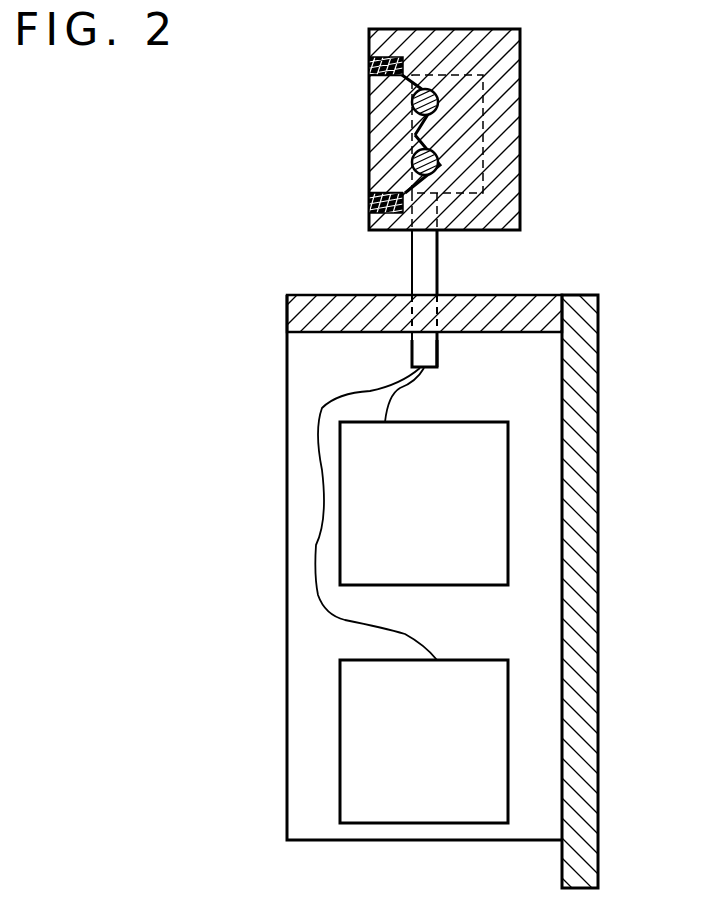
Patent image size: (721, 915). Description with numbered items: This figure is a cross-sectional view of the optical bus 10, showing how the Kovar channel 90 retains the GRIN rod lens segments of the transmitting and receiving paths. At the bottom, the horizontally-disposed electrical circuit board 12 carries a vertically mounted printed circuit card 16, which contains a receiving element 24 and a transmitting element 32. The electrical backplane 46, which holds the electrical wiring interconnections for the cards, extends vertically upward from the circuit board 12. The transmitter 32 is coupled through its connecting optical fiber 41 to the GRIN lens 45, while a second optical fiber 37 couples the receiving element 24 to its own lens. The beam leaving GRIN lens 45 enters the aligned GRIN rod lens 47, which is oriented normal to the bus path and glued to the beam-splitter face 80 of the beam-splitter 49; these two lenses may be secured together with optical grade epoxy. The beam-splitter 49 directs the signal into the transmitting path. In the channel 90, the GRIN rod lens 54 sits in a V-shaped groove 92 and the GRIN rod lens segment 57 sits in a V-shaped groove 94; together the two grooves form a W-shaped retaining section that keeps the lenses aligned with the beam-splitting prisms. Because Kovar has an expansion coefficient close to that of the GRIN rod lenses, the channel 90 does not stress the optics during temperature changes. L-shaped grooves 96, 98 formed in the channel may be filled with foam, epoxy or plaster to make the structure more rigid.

The optical bus 10 is at (422, 596).
The electrical circuit board 12 is at (580, 596).
The printed circuit card 16 is at (300, 703).
The receiving element 24 is at (424, 741).
The transmitting element 32 is at (424, 503).
The optical fiber 37 is at (318, 596).
The optical fiber 41 is at (397, 398).
The GRIN rod lens 45 is at (440, 352).
The electrical backplane 46 is at (290, 310).
The GRIN rod lens 47 is at (412, 258).
The beam-splitter 49 is at (373, 147).
The GRIN rod lens segment 54 is at (412, 103).
The GRIN rod lens segment 57 is at (411, 165).
The beam-splitting prism face 80 is at (467, 231).
The channel 90 is at (413, 135).
The V-shaped groove 92 is at (442, 106).
The V-shaped groove 94 is at (443, 165).
The L-shaped groove 96 is at (369, 205).
The L-shaped groove 98 is at (369, 60).